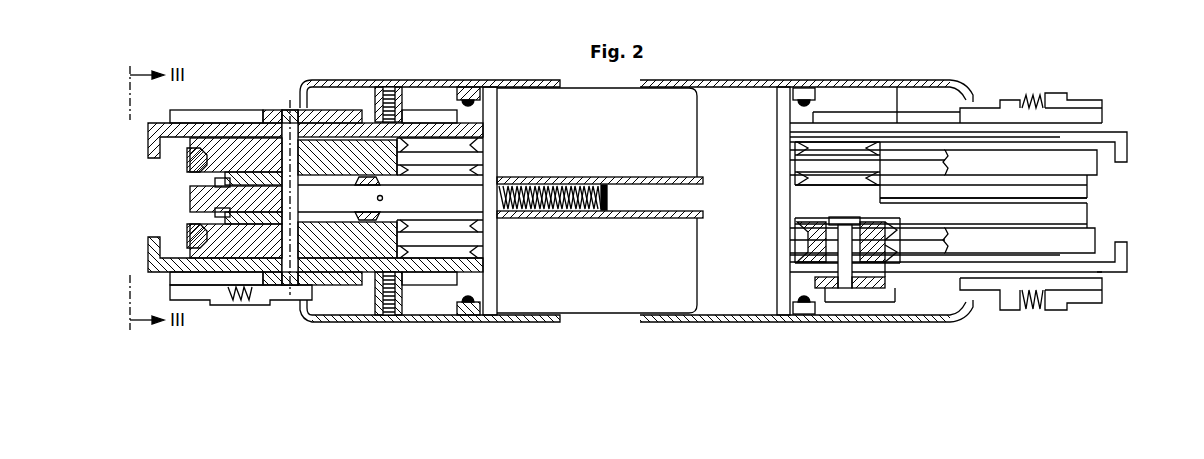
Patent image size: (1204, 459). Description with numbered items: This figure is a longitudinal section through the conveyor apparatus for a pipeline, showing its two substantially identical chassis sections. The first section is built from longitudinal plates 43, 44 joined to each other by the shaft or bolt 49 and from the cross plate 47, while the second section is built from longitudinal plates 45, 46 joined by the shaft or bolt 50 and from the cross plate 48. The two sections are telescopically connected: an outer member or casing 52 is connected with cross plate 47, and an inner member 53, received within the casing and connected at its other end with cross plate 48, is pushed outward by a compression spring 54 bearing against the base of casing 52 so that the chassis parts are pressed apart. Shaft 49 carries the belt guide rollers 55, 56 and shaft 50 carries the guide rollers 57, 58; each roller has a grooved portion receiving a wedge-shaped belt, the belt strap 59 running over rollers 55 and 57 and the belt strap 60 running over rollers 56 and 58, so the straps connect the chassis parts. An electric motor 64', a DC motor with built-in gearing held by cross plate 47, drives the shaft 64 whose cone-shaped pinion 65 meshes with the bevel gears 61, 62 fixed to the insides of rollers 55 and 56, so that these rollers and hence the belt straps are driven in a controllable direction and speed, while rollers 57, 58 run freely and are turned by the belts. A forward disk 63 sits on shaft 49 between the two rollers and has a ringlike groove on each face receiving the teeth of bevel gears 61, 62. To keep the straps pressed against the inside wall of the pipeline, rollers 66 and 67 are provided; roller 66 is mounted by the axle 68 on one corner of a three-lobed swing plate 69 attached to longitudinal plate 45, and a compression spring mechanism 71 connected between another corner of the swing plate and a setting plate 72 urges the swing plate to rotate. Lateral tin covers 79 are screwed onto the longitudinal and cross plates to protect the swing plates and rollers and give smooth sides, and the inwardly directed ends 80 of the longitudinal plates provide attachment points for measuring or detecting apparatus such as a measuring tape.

The longitudinal plate 43 is at (172, 270).
The longitudinal plate 44 is at (173, 128).
The longitudinal plate 45 is at (1085, 272).
The longitudinal plate 46 is at (1097, 130).
The cross plate 47 is at (490, 100).
The cross plate 48 is at (782, 98).
The shaft or bolt 49 is at (286, 140).
The shaft or bolt 50 is at (988, 203).
The outer member or casing 52 is at (663, 178).
The inner member 53 is at (747, 202).
The compression spring 54 is at (570, 212).
The belt guide roller 55 is at (233, 262).
The belt guide roller 56 is at (233, 147).
The belt guide roller 57 is at (1072, 215).
The belt guide roller 58 is at (1075, 193).
The belt strap 59 is at (192, 238).
The belt strap 60 is at (190, 160).
The bevel gear 61 is at (213, 222).
The bevel gear 62 is at (190, 175).
The forward disk 63 is at (212, 200).
The shaft 64 is at (440, 282).
The electric motor 64' is at (597, 200).
The cone-shaped pinion 65 is at (380, 213).
The roller 66 is at (825, 238).
The roller 67 is at (440, 160).
The axle 68 is at (845, 260).
The swing plate 69 is at (872, 285).
The compression spring mechanism 71 is at (1033, 300).
The setting plate 72 is at (1075, 283).
The lateral tin cover 79 is at (362, 82).
The inwardly directed end 80 is at (1120, 153).